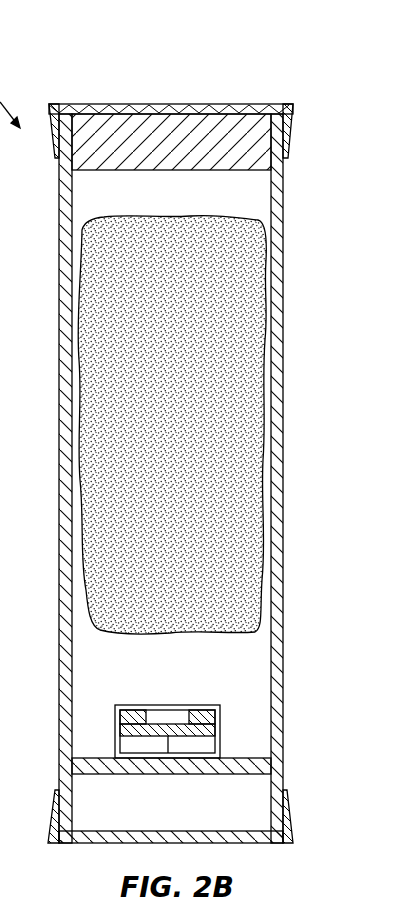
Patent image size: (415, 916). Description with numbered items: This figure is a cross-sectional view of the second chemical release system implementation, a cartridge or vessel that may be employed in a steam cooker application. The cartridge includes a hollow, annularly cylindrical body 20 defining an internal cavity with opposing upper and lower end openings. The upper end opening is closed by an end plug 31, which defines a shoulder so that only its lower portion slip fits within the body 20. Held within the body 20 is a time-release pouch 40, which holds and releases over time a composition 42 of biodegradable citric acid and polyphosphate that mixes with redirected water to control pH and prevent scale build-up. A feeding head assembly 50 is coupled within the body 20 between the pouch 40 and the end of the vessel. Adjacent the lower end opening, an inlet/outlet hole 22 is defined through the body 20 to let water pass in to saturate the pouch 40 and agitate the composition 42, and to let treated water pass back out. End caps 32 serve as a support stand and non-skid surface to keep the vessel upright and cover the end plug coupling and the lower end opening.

The body 20 is at (282, 335).
The inlet/outlet hole 22 is at (277, 777).
The end plug 31 is at (205, 137).
The end cap 32 is at (297, 107).
The time-release pouch 40 is at (258, 433).
The composition 42 is at (237, 540).
The feeding head assembly 50 is at (137, 797).